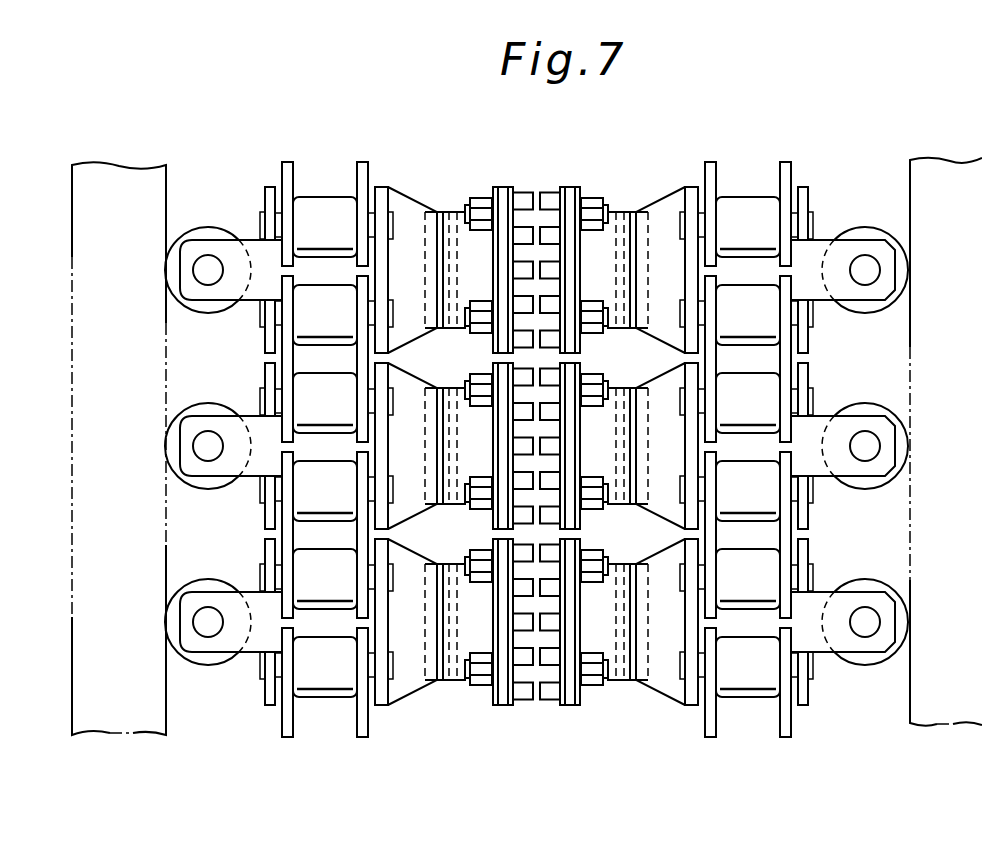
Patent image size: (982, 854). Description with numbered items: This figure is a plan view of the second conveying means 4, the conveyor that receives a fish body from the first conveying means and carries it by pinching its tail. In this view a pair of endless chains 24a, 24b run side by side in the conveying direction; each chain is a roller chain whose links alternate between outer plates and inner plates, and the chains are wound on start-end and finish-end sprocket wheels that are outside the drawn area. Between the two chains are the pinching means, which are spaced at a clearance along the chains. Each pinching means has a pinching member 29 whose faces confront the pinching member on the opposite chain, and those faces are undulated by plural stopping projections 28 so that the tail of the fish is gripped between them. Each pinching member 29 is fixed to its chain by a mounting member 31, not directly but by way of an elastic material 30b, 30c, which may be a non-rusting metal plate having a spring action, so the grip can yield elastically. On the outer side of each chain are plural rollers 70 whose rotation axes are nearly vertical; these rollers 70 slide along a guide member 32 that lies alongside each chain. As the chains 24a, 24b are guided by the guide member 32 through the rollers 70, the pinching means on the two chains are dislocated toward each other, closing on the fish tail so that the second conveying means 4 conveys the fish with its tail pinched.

The second conveying means 4 is at (743, 708).
The endless chain 24a is at (325, 202).
The endless chain 24b is at (742, 203).
The stopping projections 28 is at (548, 198).
The pinching member 29 is at (512, 186).
The elastic material 30b is at (610, 317).
The elastic material 30c is at (637, 315).
The mounting member 31 is at (403, 207).
The guide member 32 is at (134, 178).
The rollers 70 is at (861, 228).